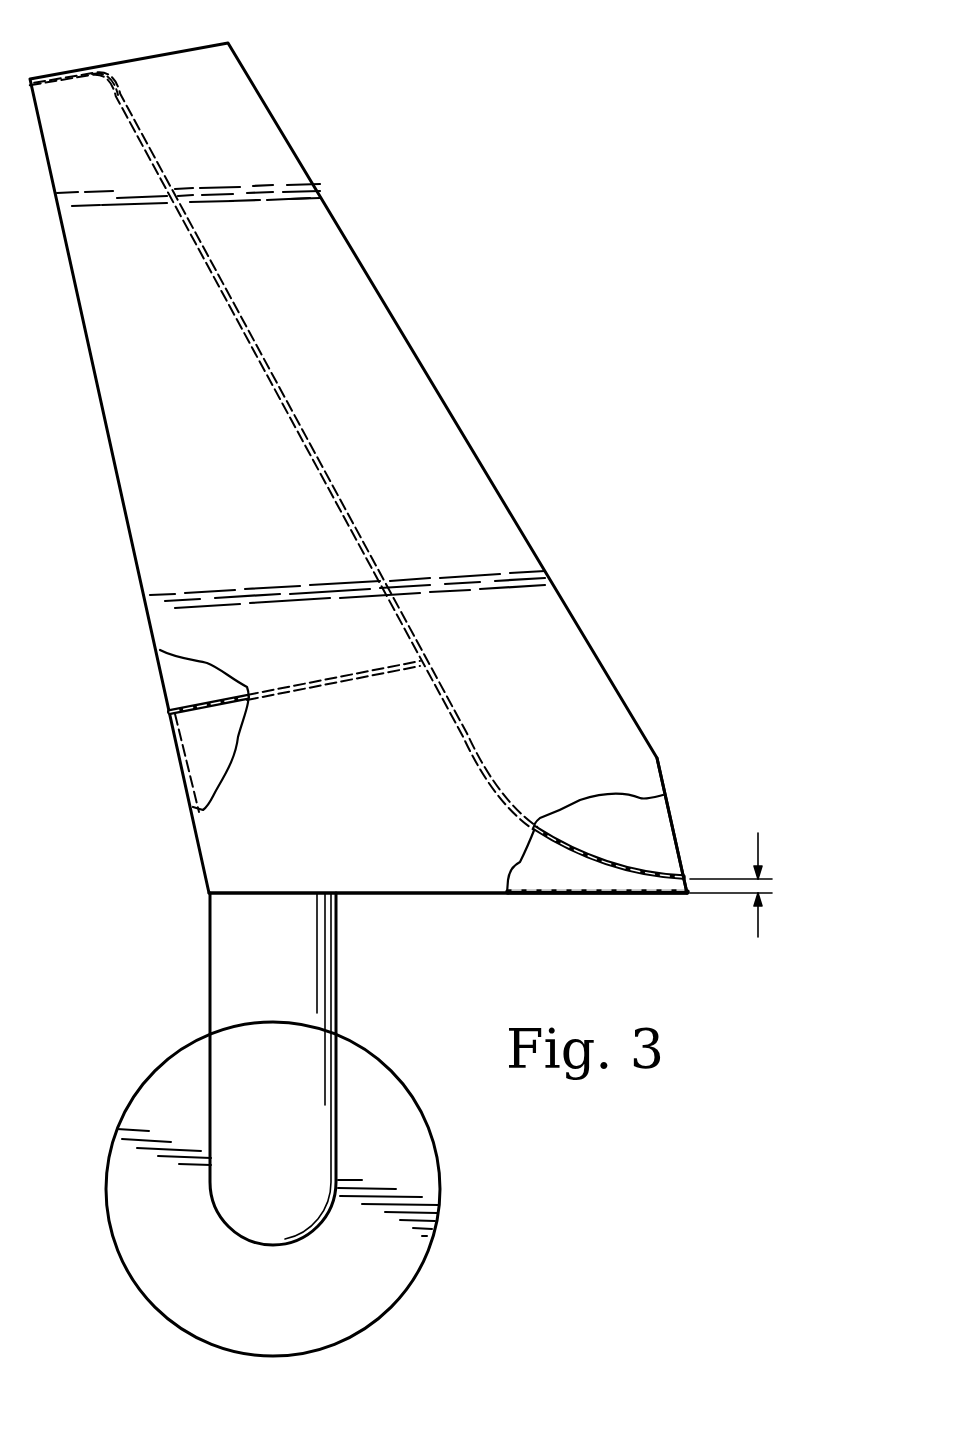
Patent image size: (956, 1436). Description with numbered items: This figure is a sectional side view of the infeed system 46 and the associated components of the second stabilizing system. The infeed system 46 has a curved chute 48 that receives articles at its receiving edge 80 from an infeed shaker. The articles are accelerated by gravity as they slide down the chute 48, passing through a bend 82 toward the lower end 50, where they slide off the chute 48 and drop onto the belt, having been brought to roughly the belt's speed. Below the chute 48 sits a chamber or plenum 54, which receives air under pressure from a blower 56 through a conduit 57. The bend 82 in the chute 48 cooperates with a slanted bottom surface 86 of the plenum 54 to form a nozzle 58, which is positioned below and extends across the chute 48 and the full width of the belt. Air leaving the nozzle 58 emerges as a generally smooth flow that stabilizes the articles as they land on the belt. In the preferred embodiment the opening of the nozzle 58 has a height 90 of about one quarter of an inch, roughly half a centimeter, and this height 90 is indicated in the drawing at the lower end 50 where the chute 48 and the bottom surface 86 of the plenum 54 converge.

The infeed system 46 is at (473, 408).
The chute 48 is at (250, 333).
The lower end 50 is at (668, 884).
The plenum 54 is at (208, 730).
The blower 56 is at (436, 1123).
The conduit 57 is at (335, 970).
The nozzle 58 is at (683, 897).
The receiving edge 80 is at (108, 80).
The bend 82 is at (590, 855).
The slanted bottom surface 86 is at (457, 897).
The height 90 is at (770, 888).